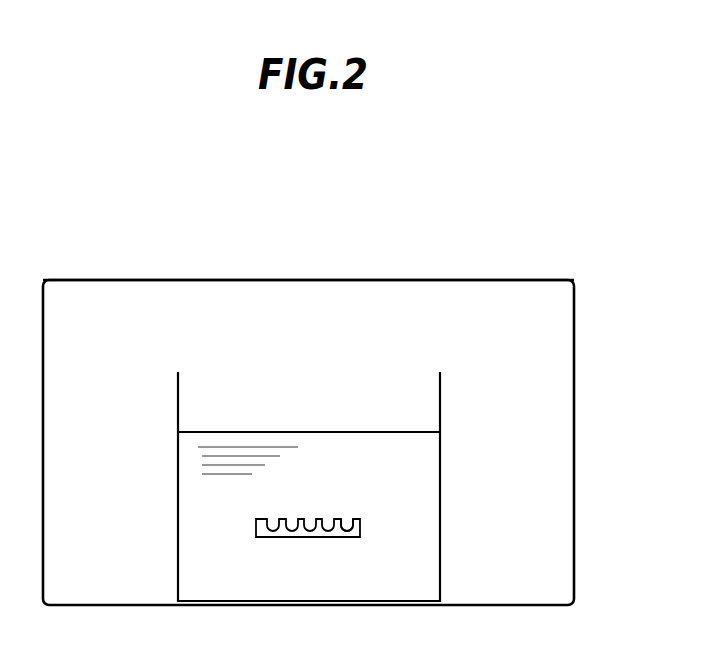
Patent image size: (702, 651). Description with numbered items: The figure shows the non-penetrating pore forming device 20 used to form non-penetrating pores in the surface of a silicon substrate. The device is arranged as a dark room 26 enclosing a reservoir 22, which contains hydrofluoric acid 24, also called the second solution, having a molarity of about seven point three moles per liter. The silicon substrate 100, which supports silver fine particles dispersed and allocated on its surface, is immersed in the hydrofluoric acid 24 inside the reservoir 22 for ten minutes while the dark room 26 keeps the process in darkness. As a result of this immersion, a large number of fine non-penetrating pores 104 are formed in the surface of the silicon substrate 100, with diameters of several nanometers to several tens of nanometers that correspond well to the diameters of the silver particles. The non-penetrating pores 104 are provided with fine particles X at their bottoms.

The non-penetrating pore forming device 20 is at (102, 229).
The reservoir 22 is at (177, 467).
The hydrofluoric acid 24 is at (202, 567).
The dark room 26 is at (402, 280).
The silicon substrate 100 is at (363, 527).
The non-penetrating pores 104 is at (344, 518).
The fine particles X is at (305, 530).